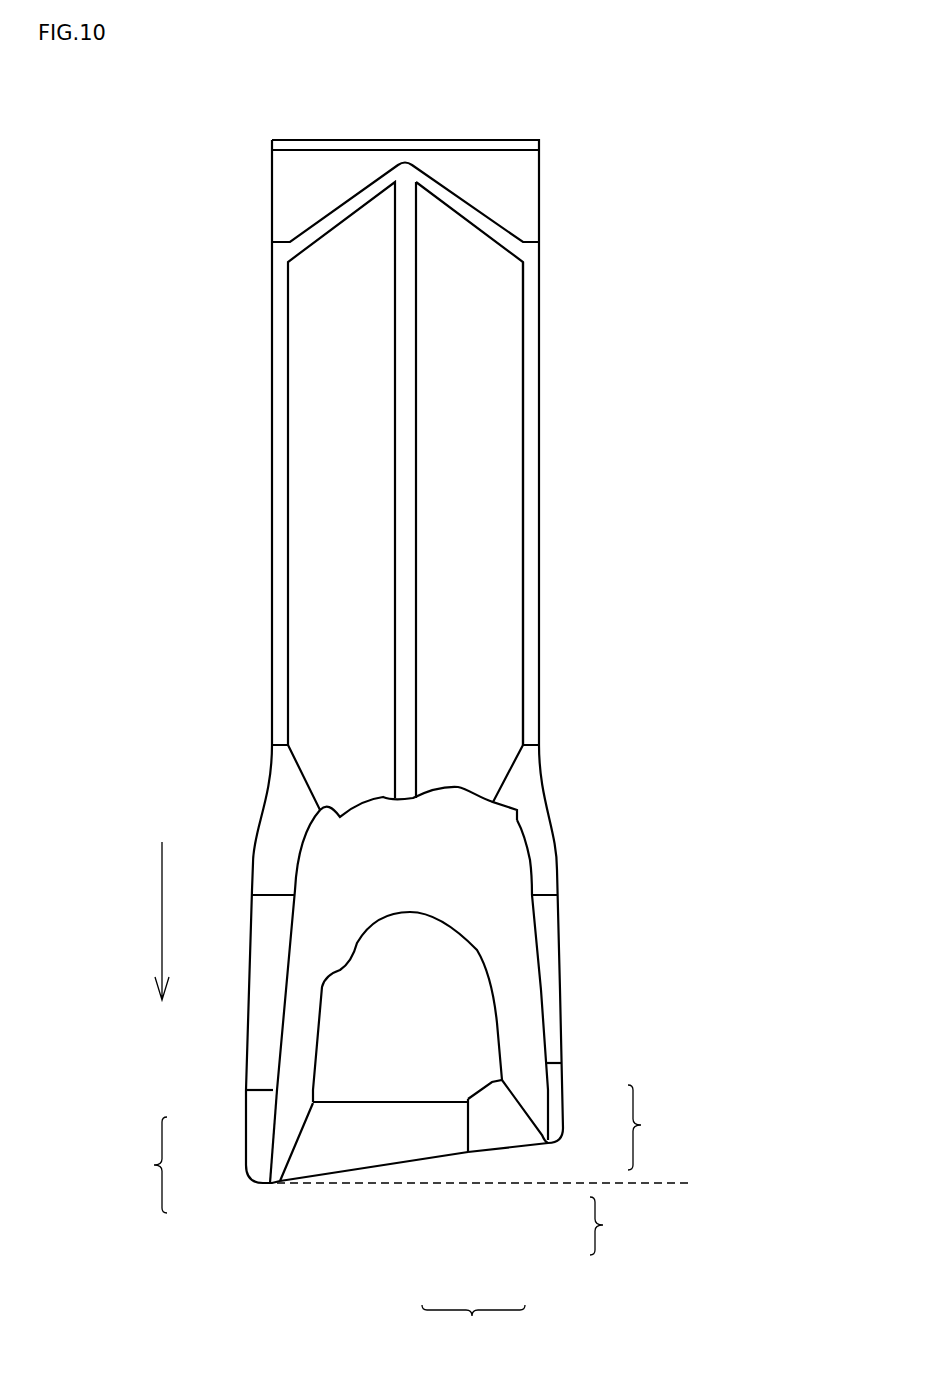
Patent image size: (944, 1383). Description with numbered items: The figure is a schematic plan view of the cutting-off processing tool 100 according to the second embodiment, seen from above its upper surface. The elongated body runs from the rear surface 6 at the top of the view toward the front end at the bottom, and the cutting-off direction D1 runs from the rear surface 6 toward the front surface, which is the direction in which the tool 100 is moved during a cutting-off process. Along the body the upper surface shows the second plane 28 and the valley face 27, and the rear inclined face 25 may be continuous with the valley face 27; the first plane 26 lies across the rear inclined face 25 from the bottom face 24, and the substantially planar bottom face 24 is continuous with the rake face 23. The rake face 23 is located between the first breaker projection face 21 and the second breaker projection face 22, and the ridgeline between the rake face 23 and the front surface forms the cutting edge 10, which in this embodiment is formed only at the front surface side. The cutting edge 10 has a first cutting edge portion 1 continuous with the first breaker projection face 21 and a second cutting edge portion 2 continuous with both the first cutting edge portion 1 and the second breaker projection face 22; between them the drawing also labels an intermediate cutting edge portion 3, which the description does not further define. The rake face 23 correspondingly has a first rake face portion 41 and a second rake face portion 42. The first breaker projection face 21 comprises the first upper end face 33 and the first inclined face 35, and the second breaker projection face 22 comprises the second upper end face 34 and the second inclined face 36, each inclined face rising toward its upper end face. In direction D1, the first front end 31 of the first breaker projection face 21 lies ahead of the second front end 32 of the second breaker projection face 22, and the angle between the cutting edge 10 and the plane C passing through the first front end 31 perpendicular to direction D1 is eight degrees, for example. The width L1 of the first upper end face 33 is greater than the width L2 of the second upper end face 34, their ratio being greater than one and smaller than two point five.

The cutting-off processing tool 100 is at (631, 171).
The rear surface 6 is at (453, 140).
The valley face 27 is at (405, 438).
The second plane 28 is at (528, 468).
The first plane 26 is at (528, 803).
The rear inclined face 25 is at (405, 878).
The bottom face 24 is at (405, 990).
The second inclined face 36 is at (538, 1102).
The second upper end face 34 is at (550, 1125).
The second front end 32 is at (562, 1135).
The second breaker projection face 22 is at (648, 1127).
The first inclined face 35 is at (287, 1137).
The first upper end face 33 is at (262, 1163).
The first front end 31 is at (250, 1180).
The first breaker projection face 21 is at (146, 1165).
The first cutting edge portion 1 is at (421, 1160).
The connecting edge 3 is at (468, 1152).
The second cutting edge portion 2 is at (494, 1152).
The cutting edge 10 is at (473, 1326).
The second rake face portion 42 is at (497, 1117).
The first rake face portion 41 is at (507, 1148).
The rake face 23 is at (610, 1226).
The plane C is at (483, 1208).
The direction D1 is at (160, 918).
The width of first upper end face L1 is at (273, 1090).
The width of second upper end face L2 is at (549, 1063).